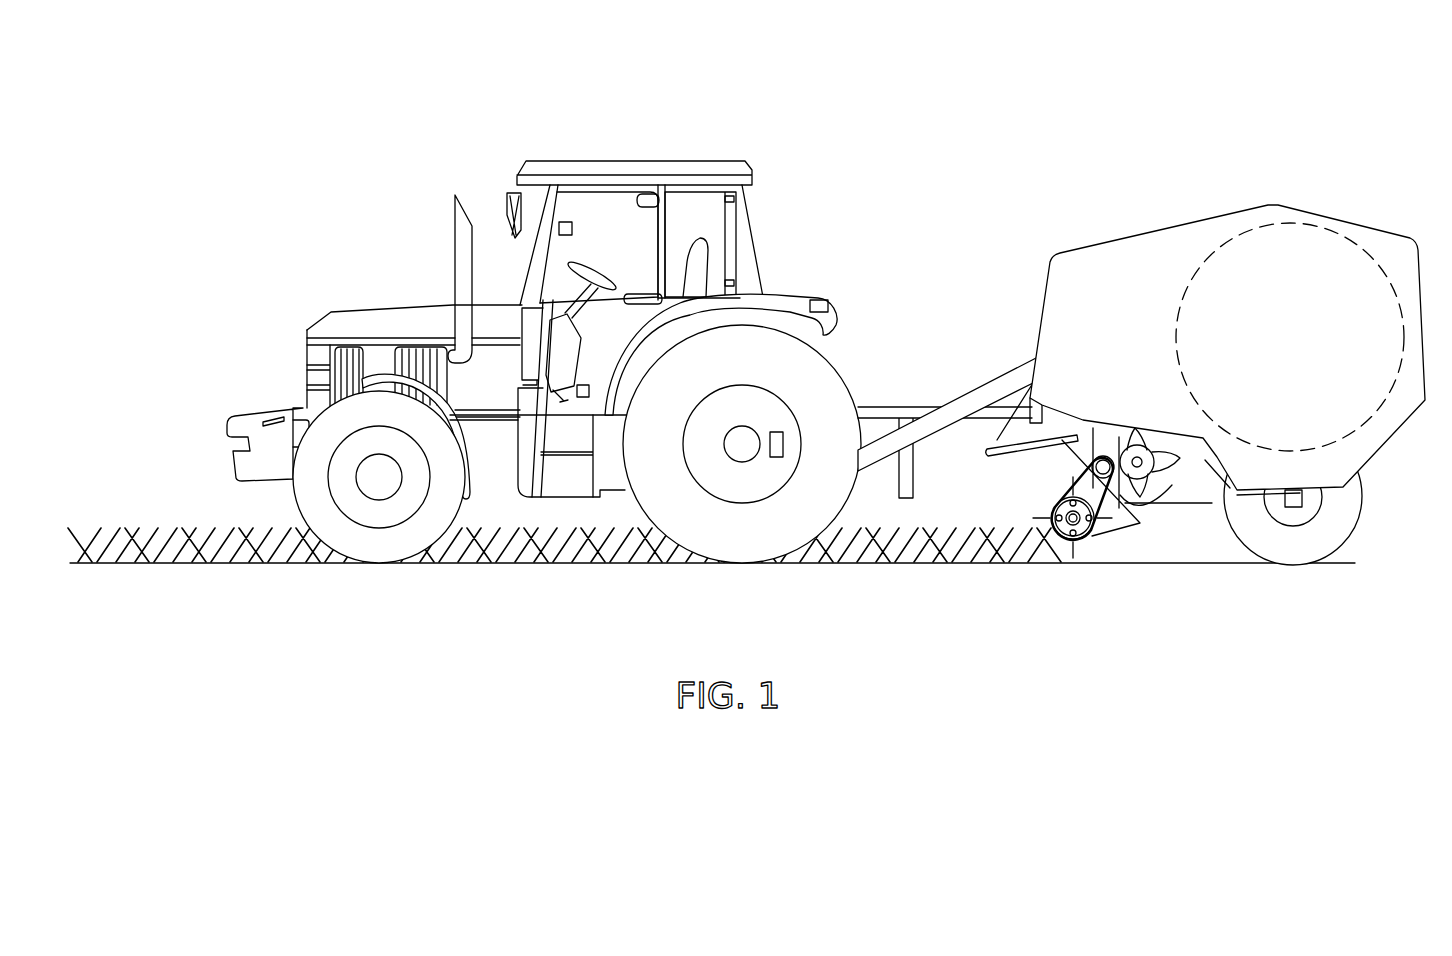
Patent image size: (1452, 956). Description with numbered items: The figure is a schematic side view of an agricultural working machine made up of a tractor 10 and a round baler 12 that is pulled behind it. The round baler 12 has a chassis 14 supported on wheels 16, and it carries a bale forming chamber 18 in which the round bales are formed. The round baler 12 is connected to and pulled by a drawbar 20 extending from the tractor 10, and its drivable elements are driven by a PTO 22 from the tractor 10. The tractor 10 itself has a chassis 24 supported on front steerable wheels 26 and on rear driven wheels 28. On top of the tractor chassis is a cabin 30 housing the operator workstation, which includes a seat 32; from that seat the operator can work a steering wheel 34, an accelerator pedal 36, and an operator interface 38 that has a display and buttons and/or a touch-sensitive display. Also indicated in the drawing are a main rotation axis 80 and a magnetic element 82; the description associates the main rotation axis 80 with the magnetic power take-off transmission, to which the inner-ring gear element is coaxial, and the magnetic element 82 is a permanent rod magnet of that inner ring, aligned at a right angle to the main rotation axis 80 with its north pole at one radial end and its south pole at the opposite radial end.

The tractor 10 is at (551, 148).
The round baler 12 is at (1153, 186).
The chassis 14 is at (1378, 432).
The wheels 16 is at (1333, 537).
The bale forming chamber 18 is at (1320, 262).
The drawbar 20 is at (984, 392).
The PTO 22 is at (880, 407).
The chassis 24 is at (500, 443).
The front steerable wheels 26 is at (378, 545).
The rear driven wheels 28 is at (745, 540).
The cabin 30 is at (740, 177).
The seat 32 is at (703, 250).
The steering wheel 34 is at (590, 270).
The accelerator pedal 36 is at (557, 393).
The operator interface 38 is at (559, 228).
The main rotation axis 80 is at (584, 398).
The magnetic element 82 is at (778, 456).